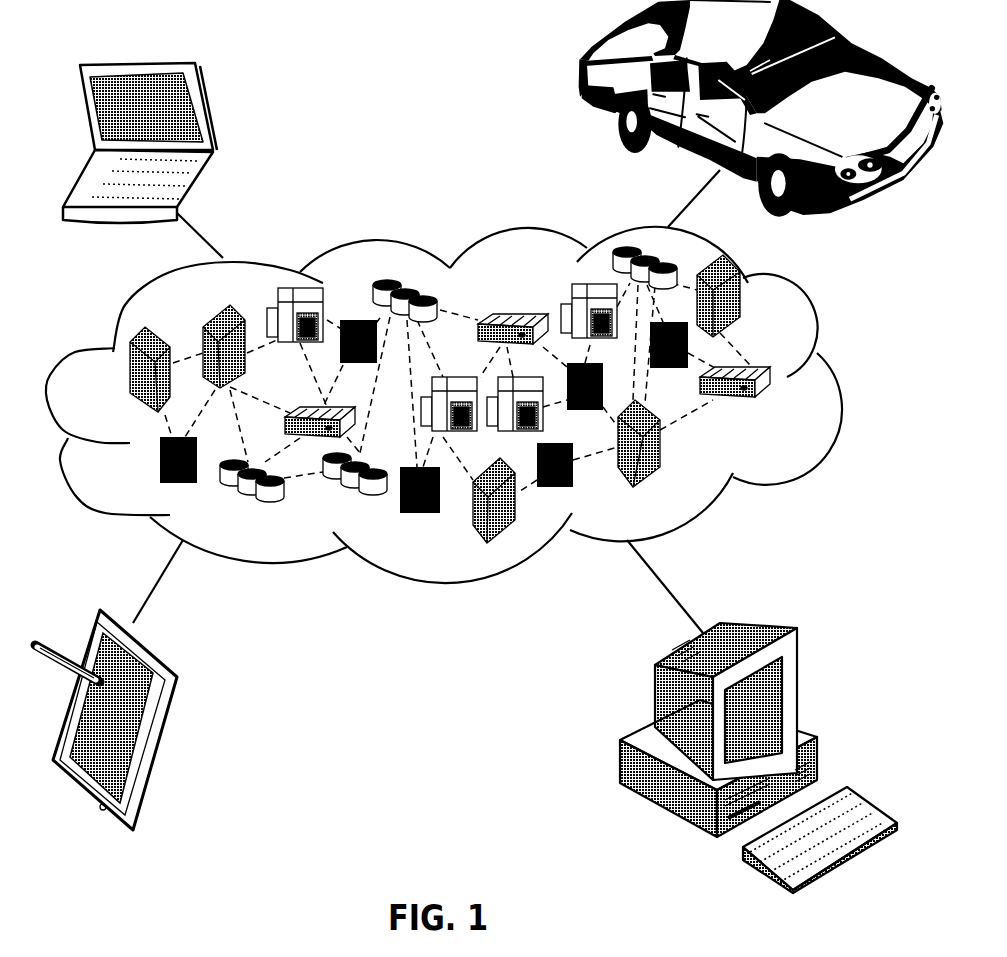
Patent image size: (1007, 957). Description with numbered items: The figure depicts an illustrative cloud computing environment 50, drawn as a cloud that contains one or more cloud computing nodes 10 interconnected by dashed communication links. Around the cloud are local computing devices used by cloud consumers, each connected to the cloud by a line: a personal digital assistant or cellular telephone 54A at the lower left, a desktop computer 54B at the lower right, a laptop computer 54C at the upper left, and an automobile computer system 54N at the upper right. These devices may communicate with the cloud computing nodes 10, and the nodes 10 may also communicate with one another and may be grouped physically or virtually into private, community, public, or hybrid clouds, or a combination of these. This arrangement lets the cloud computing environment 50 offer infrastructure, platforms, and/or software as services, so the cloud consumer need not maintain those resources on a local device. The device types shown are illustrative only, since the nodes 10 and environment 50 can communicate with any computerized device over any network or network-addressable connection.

The cloud computing node 10 is at (785, 412).
The cloud computing environment 50 is at (833, 378).
The personal digital assistant or cellular telephone 54A is at (173, 712).
The desktop computer 54B is at (767, 622).
The laptop computer 54C is at (203, 112).
The automobile computer system 54N is at (586, 80).